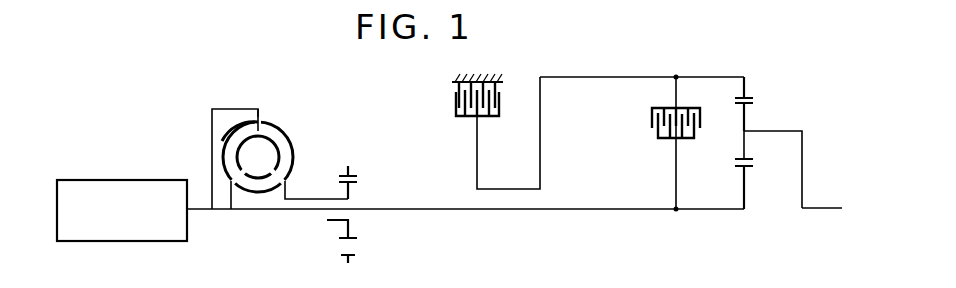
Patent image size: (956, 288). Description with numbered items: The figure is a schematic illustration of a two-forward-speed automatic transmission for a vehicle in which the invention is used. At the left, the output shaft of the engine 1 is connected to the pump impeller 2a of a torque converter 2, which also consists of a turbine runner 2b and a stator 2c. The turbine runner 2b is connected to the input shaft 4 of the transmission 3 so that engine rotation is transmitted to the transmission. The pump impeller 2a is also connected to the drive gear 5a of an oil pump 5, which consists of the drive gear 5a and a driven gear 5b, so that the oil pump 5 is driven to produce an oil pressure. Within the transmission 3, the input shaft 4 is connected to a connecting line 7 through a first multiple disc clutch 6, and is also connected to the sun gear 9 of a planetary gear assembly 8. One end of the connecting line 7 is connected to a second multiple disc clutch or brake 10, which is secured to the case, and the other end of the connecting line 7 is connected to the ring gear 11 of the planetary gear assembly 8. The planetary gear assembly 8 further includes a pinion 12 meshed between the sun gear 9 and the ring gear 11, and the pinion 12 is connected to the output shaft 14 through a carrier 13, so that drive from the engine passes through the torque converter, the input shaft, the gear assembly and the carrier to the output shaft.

The engine 1 is at (90, 180).
The torque converter 2 is at (257, 167).
The pump impeller 2a is at (283, 153).
The turbine runner 2b is at (222, 144).
The stator 2c is at (258, 190).
The transmission 3 is at (642, 58).
The input shaft 4 is at (487, 212).
The oil pump 5 is at (367, 206).
The drive gear 5a is at (358, 185).
The driven gear 5b is at (358, 256).
The first multiple disc clutch 6 is at (652, 118).
The connecting line 7 is at (563, 79).
The planetary gear assembly 8 is at (773, 158).
The sun gear 9 is at (745, 186).
The second multiple disc clutch or brake 10 is at (456, 106).
The ring gear 11 is at (749, 85).
The pinion 12 is at (742, 133).
The carrier 13 is at (803, 167).
The output shaft 14 is at (840, 210).